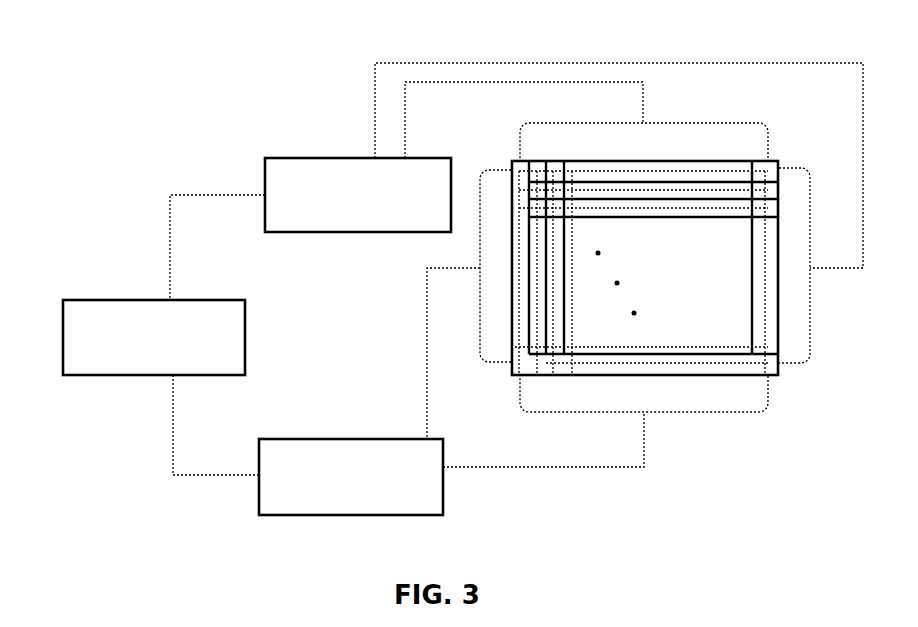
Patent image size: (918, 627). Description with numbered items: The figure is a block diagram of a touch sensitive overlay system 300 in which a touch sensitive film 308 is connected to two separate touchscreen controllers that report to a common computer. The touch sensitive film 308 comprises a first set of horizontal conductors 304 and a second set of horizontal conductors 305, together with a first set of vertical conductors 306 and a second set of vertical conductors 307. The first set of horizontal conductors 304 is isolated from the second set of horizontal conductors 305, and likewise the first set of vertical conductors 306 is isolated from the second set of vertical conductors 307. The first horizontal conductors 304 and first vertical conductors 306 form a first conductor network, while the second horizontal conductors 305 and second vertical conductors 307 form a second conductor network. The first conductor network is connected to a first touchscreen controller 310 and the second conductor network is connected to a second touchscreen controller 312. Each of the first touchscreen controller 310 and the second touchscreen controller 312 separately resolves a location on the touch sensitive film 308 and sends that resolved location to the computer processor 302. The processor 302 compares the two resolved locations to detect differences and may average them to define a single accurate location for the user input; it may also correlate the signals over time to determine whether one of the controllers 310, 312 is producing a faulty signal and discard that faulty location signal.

The touchscreen system 300 is at (108, 108).
The processor 302 is at (63, 300).
The first set of horizontal conductors 304 is at (770, 181).
The second set of horizontal conductors 305 is at (518, 172).
The first set of vertical conductors 306 is at (748, 221).
The second set of vertical conductors 307 is at (534, 362).
The touch sensitive film 308 is at (770, 368).
The first touchscreen controller 310 is at (266, 163).
The second touchscreen controller 312 is at (259, 444).